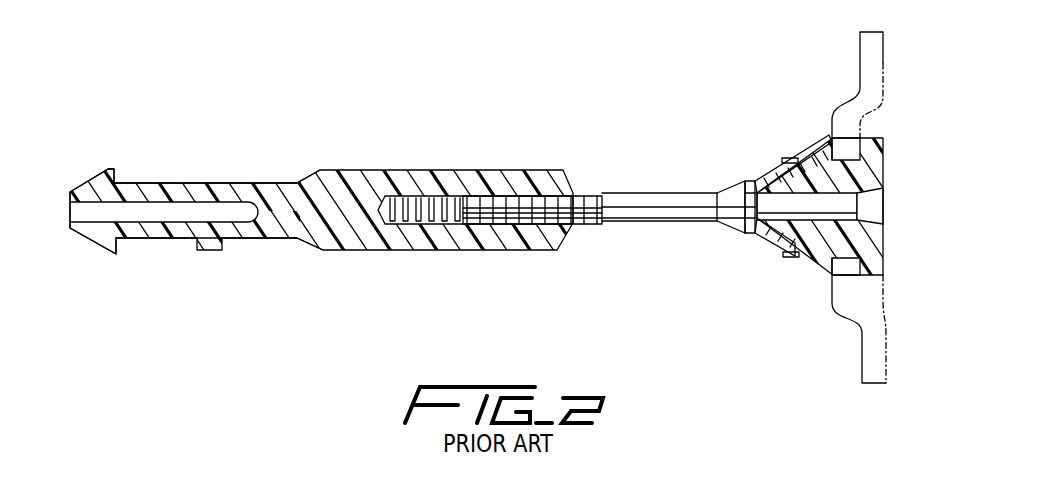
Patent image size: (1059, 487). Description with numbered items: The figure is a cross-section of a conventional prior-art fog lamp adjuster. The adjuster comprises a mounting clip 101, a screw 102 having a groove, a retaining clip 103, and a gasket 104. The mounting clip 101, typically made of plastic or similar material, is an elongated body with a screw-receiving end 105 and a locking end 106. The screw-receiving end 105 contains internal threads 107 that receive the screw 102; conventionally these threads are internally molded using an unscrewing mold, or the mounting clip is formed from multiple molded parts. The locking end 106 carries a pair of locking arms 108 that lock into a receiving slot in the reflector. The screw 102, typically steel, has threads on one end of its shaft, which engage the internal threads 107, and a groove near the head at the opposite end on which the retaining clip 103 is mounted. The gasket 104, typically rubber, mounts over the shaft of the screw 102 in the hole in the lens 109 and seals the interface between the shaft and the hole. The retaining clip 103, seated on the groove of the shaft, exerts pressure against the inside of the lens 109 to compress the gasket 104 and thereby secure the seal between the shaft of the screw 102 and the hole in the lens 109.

The mounting clip 101 is at (450, 160).
The screw 102 is at (657, 200).
The retaining clip 103 is at (768, 175).
The gasket 104 is at (818, 163).
The screw-receiving end 105 is at (553, 178).
The locking end 106 is at (282, 202).
The internal threads 107 is at (410, 200).
The locking arms 108 is at (68, 231).
The lens 109 is at (860, 65).